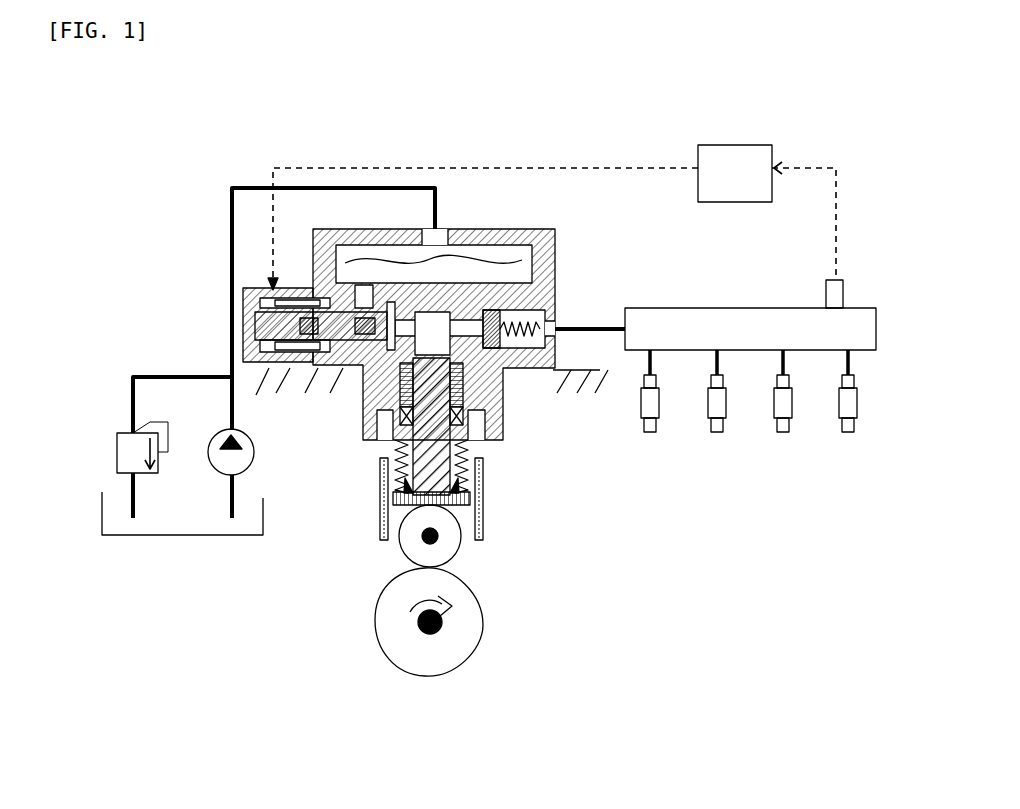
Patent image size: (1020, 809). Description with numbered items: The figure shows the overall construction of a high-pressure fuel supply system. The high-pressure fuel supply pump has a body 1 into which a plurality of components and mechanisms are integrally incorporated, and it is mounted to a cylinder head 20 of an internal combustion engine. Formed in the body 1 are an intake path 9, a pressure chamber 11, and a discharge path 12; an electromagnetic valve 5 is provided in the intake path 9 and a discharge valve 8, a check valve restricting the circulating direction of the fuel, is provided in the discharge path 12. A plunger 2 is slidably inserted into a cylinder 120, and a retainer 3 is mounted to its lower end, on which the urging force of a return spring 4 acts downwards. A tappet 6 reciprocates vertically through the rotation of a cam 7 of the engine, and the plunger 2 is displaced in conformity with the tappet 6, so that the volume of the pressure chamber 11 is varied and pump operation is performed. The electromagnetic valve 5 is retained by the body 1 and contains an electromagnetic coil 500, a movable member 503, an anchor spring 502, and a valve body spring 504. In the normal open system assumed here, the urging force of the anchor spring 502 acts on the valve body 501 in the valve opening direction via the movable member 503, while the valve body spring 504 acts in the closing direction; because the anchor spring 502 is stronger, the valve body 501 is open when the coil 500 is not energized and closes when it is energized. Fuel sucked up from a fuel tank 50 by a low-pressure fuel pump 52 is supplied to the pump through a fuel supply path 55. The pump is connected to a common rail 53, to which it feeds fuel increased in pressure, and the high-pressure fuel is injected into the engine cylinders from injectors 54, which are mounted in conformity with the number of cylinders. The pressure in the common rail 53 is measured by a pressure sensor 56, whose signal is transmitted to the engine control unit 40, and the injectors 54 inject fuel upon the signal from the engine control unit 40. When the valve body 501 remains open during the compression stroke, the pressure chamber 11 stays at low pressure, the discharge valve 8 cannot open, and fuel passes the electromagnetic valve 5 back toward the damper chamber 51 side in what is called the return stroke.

The body 1 is at (398, 297).
The plunger 2 is at (447, 422).
The retainer 3 is at (480, 528).
The return spring 4 is at (420, 485).
The electromagnetic valve 5 is at (318, 290).
The tappet 6 is at (383, 507).
The cam 7 is at (388, 617).
The discharge valve 8 is at (462, 381).
The intake path 9 is at (362, 297).
The pressure chamber 11 is at (432, 330).
The discharge path 12 is at (460, 400).
The cylinder head 20 is at (553, 390).
The engine control unit (ECU) 40 is at (724, 147).
The fuel tank 50 is at (182, 535).
The damper chamber 51 is at (517, 255).
The low-pressure fuel pump 52 is at (228, 468).
The common rail 53 is at (657, 335).
The injectors 54 is at (720, 398).
The fuel supply path 55 is at (402, 297).
The pressure sensor 56 is at (833, 297).
The cylinder 120 is at (470, 443).
The electromagnetic coil 500 is at (325, 296).
The valve body 501 is at (372, 332).
The anchor spring 502 is at (338, 322).
The movable member 503 is at (335, 318).
The valve body spring 504 is at (385, 340).